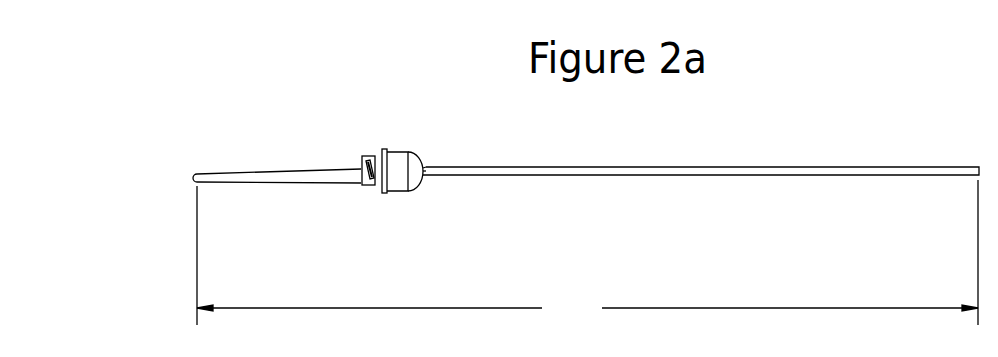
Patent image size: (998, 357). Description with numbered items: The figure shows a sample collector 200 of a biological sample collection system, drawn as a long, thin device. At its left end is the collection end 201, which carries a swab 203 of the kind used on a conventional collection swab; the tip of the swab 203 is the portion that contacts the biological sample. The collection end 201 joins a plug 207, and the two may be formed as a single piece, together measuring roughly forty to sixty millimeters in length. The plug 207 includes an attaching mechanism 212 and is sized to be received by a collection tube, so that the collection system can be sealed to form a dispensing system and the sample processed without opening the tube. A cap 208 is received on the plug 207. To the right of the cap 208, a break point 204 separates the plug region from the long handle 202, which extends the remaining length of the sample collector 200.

The sample collector 200 is at (587, 252).
The collection end 201 is at (325, 170).
The handle 202 is at (752, 167).
The swab 203 is at (208, 174).
The break point 204 is at (427, 176).
The plug 207 is at (377, 188).
The cap 208 is at (393, 148).
The attaching mechanism 212 is at (369, 155).